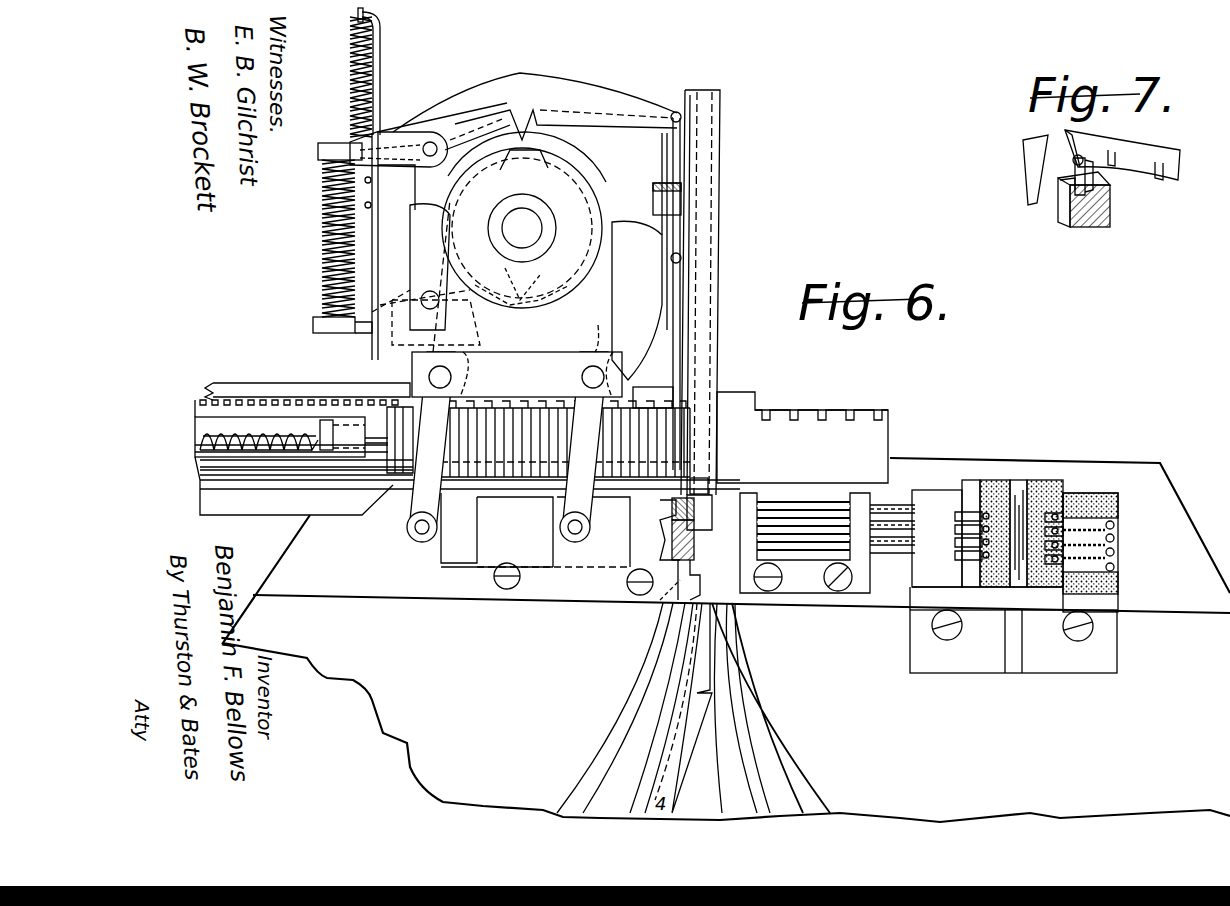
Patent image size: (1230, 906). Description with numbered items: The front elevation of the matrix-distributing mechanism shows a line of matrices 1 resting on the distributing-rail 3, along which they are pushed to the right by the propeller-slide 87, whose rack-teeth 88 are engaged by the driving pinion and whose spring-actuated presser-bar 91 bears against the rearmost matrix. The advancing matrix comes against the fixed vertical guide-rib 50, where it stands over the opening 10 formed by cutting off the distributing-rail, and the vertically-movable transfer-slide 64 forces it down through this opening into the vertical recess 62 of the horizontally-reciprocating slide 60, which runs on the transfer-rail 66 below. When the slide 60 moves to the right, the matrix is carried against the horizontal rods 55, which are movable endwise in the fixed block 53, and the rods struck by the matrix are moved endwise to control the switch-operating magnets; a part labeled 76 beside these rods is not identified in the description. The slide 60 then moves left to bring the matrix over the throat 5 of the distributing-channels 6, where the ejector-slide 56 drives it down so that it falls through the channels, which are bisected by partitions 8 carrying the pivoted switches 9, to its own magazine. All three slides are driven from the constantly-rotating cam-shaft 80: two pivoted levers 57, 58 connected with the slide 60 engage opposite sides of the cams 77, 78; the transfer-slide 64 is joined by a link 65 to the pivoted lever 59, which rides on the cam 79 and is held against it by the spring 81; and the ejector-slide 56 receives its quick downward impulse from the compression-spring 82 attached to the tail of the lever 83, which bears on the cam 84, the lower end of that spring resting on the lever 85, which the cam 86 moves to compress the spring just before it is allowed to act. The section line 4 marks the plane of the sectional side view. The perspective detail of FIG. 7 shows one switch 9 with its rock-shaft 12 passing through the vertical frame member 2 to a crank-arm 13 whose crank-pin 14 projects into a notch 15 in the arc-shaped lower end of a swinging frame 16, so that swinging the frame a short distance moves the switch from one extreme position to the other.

In FIG. 6, the matrices 1 is at (530, 455).
In FIG. 6, the vertical frame member 2 is at (715, 640).
In FIG. 7, the vertical frame member 2 is at (1084, 212).
In FIG. 6, the distributing-rail 3 is at (328, 470).
In FIG. 6, the section line 4 is at (634, 256).
In FIG. 6, the throat of the distributing-channels 5 is at (682, 630).
In FIG. 6, the distributing-channels 6 is at (680, 682).
In FIG. 6, the partitions 8 is at (640, 800).
In FIG. 6, the switches 9 is at (703, 672).
In FIG. 7, the switches 9 is at (1025, 185).
In FIG. 6, the opening 10 is at (672, 502).
In FIG. 7, the rock-shaft 12 is at (1062, 200).
In FIG. 7, the crank-arm 13 is at (1093, 180).
In FIG. 7, the crank-pin 14 is at (1073, 160).
In FIG. 7, the notches 15 is at (1158, 180).
In FIG. 7, the swinging frames 16 is at (1122, 155).
In FIG. 6, the guide-rib 50 is at (695, 486).
In FIG. 6, the fixed block 53 is at (878, 496).
In FIG. 6, the horizontal rods 55 is at (900, 540).
In FIG. 6, the ejector-slide 56 is at (715, 162).
In FIG. 6, the pivoted lever 57 is at (431, 371).
In FIG. 6, the pivoted lever 58 is at (584, 447).
In FIG. 6, the pivoted lever 59 is at (604, 100).
In FIG. 6, the horizontally-reciprocating slide 60 is at (565, 542).
In FIG. 6, the vertical recess 62 is at (695, 572).
In FIG. 6, the transfer-slide 64 is at (690, 325).
In FIG. 6, the link 65 is at (673, 158).
In FIG. 6, the transfer-rail 66 is at (675, 585).
In FIG. 6, the terminal block 76 is at (958, 515).
In FIG. 6, the cam 77 is at (522, 228).
In FIG. 6, the cam 78 is at (524, 160).
In FIG. 6, the cam 79 is at (560, 160).
In FIG. 6, the cam-shaft 80 is at (522, 228).
In FIG. 6, the spring 81 is at (352, 78).
In FIG. 6, the compression-spring 82 is at (322, 287).
In FIG. 6, the lever 83 is at (432, 132).
In FIG. 6, the cam 84 is at (417, 246).
In FIG. 6, the lever 85 is at (430, 317).
In FIG. 6, the cam 86 is at (508, 300).
In FIG. 6, the propeller-slide 87 is at (200, 420).
In FIG. 6, the rack-teeth 88 is at (818, 410).
In FIG. 6, the presser-bar 91 is at (392, 462).